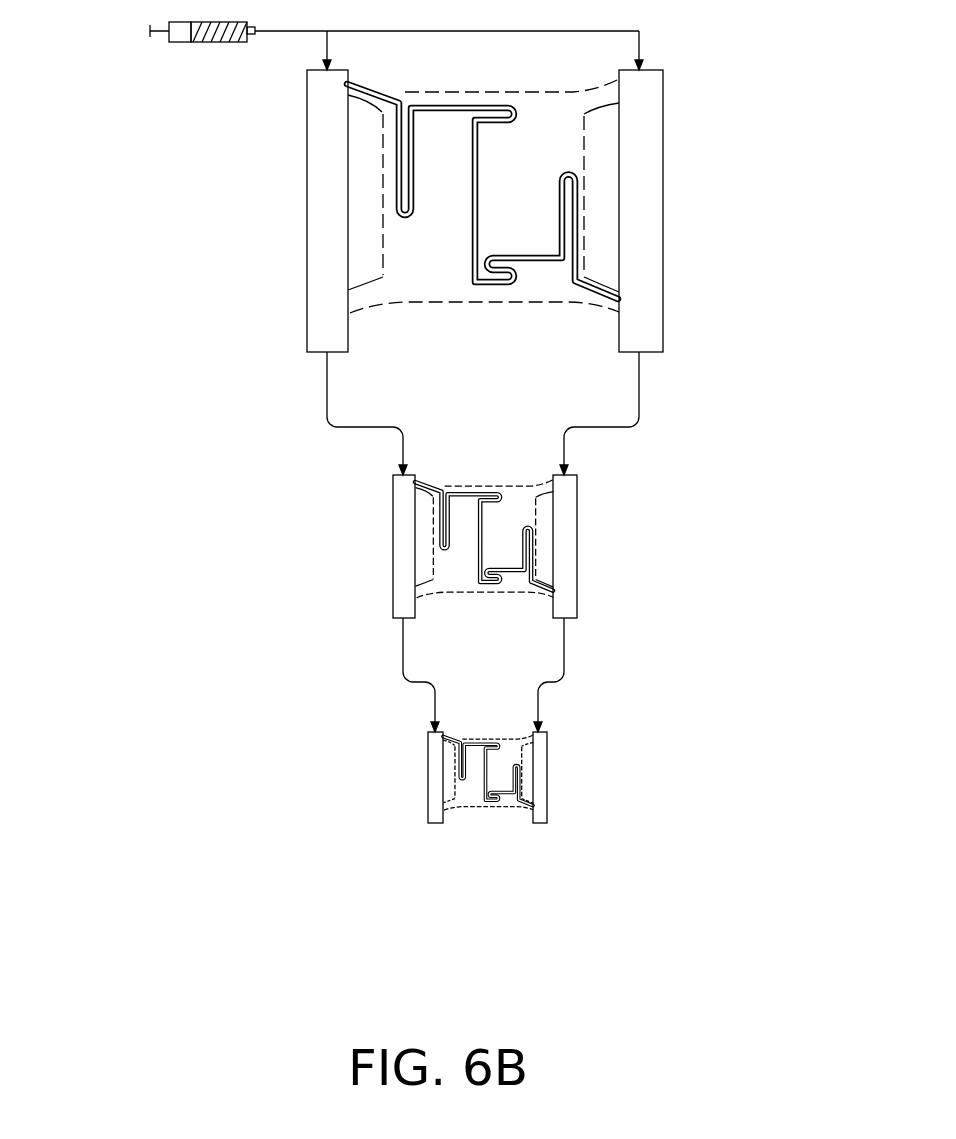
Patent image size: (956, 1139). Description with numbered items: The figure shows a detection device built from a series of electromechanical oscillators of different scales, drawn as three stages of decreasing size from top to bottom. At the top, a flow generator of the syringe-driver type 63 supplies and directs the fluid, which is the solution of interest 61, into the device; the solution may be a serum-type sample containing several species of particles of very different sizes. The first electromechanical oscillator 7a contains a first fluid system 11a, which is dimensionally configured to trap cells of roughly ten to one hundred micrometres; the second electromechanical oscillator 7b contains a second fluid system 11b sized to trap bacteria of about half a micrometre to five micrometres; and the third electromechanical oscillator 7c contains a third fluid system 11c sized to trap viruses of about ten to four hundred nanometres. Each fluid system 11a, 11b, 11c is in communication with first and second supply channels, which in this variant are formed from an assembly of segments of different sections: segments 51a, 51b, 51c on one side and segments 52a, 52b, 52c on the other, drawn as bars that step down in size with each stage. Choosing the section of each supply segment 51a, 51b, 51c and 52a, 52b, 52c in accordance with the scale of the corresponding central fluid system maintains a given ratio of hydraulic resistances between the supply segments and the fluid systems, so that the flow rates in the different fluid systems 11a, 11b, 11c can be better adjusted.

The solution of interest 61 is at (228, 43).
The syringe-driver type flow generator 63 is at (178, 43).
The first electromechanical oscillator 7a is at (483, 92).
The first fluid system 11a is at (446, 268).
The first supply channel segment 51a is at (320, 213).
The second supply channel segment 52a is at (640, 207).
The second electromechanical oscillator 7b is at (493, 481).
The second fluid system 11b is at (462, 570).
The first supply channel segment 51b is at (400, 548).
The second supply channel segment 52b is at (577, 548).
The third electromechanical oscillator 7c is at (485, 735).
The third fluid system 11c is at (469, 792).
The first supply channel segment 51c is at (433, 780).
The second supply channel segment 52c is at (548, 778).